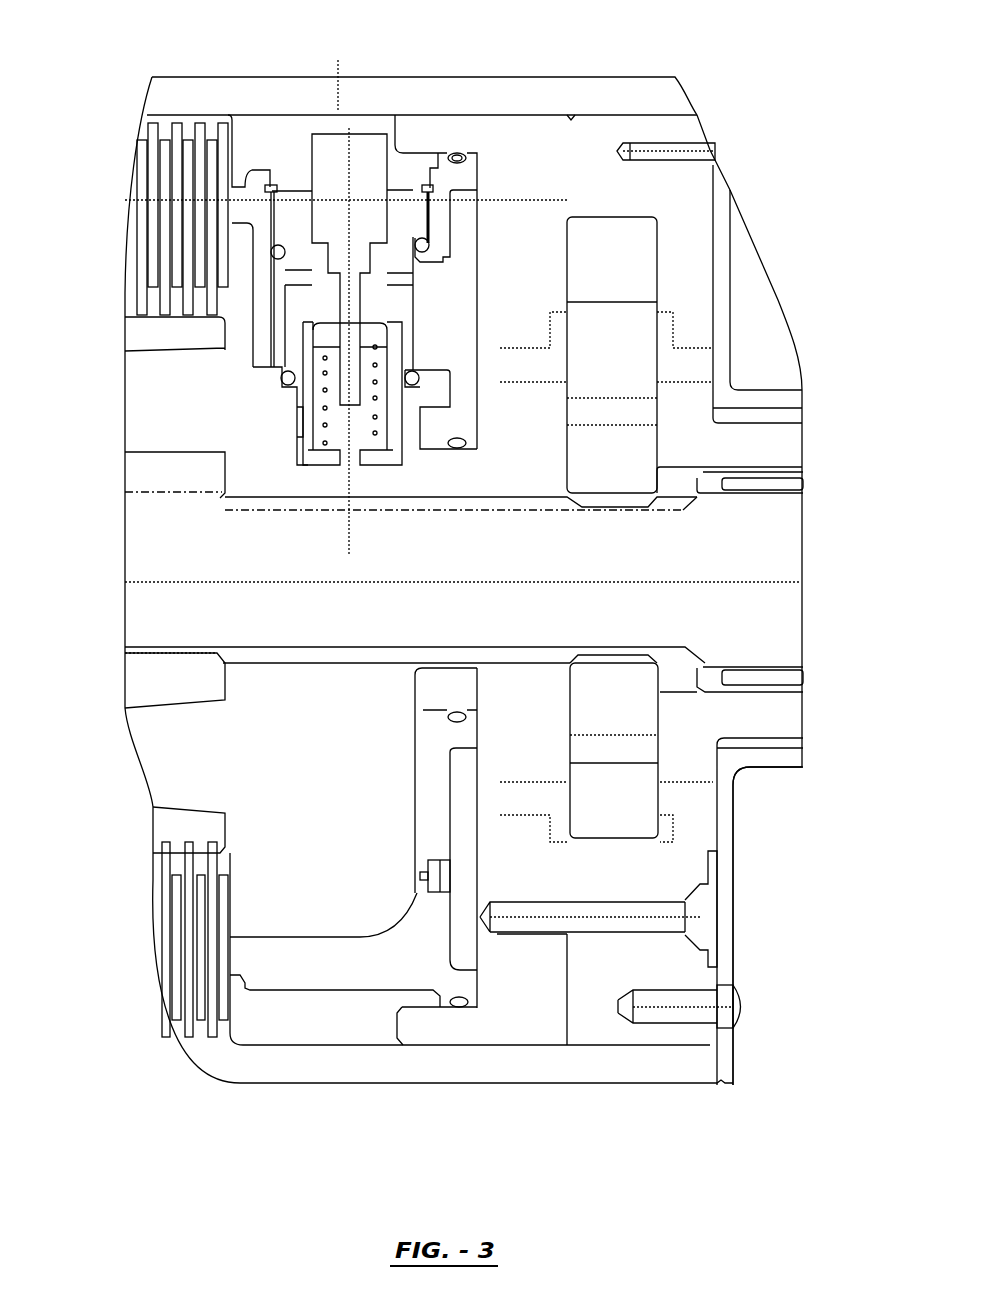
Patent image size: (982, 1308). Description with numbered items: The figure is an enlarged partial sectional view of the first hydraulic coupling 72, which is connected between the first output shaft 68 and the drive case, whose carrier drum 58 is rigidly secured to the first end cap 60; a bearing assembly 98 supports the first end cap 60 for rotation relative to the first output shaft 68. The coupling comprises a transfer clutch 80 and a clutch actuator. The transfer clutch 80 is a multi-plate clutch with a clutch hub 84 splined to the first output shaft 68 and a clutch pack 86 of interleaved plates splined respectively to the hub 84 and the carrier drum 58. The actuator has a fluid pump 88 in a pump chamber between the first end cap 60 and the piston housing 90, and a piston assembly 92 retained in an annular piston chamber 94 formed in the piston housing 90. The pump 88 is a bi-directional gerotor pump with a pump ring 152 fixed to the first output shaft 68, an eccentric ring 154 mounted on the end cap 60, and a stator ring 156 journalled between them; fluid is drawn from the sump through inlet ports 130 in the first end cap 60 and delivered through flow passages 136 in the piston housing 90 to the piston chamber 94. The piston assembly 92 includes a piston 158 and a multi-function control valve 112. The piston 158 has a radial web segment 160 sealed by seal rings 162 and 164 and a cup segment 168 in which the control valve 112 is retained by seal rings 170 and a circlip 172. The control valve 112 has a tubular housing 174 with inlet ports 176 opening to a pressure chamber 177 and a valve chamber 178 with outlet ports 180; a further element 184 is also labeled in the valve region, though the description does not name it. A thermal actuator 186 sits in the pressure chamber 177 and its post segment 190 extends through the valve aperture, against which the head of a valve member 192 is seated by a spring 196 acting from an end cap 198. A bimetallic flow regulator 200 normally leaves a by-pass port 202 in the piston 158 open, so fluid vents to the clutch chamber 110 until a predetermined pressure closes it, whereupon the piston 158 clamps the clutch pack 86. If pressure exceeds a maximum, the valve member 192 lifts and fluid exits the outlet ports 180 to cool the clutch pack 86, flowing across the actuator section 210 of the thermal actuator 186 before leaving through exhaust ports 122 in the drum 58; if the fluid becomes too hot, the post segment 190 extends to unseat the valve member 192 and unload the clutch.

The carrier drum 58 is at (358, 1070).
The first end cap 60 is at (668, 1028).
The first output shaft 68 is at (155, 548).
The first hydraulic coupling 72 is at (168, 1050).
The transfer clutch 80 is at (108, 366).
The clutch hub 84 is at (143, 330).
The clutch pack 86 is at (145, 169).
The fluid pump 88 is at (595, 463).
The piston housing 90 is at (518, 1018).
The piston assembly 92 is at (420, 152).
The piston chamber 94 is at (458, 860).
The bearing assembly 98 is at (756, 485).
The clutch chamber 110 is at (201, 396).
The control valve 112 is at (268, 184).
The exhaust ports 122 is at (336, 97).
The inlet ports 130 is at (702, 367).
The flow passages 136 is at (512, 362).
The pump ring 152 is at (633, 711).
The eccentric ring 154 is at (630, 271).
The stator ring 156 is at (632, 366).
The piston 158 is at (325, 990).
The radial web segment 160 is at (432, 783).
The seal ring 162 is at (468, 449).
The seal ring 164 is at (460, 154).
The cup segment 168 is at (438, 233).
The seal rings 170 is at (273, 257).
The circlip 172 is at (300, 150).
The tubular housing 174 is at (390, 300).
The inlet ports 176 is at (402, 275).
The pressure chamber 177 is at (322, 265).
The valve chamber 178 is at (385, 437).
The outlet ports 180 is at (300, 425).
The valve seat 184 is at (383, 315).
The thermal actuator 186 is at (365, 160).
The post segment 190 is at (340, 293).
The valve member 192 is at (360, 385).
The spring 196 is at (323, 425).
The end cap 198 is at (325, 452).
The flow regulator 200 is at (437, 870).
The by-pass port 202 is at (428, 880).
The actuator section 210 is at (328, 177).